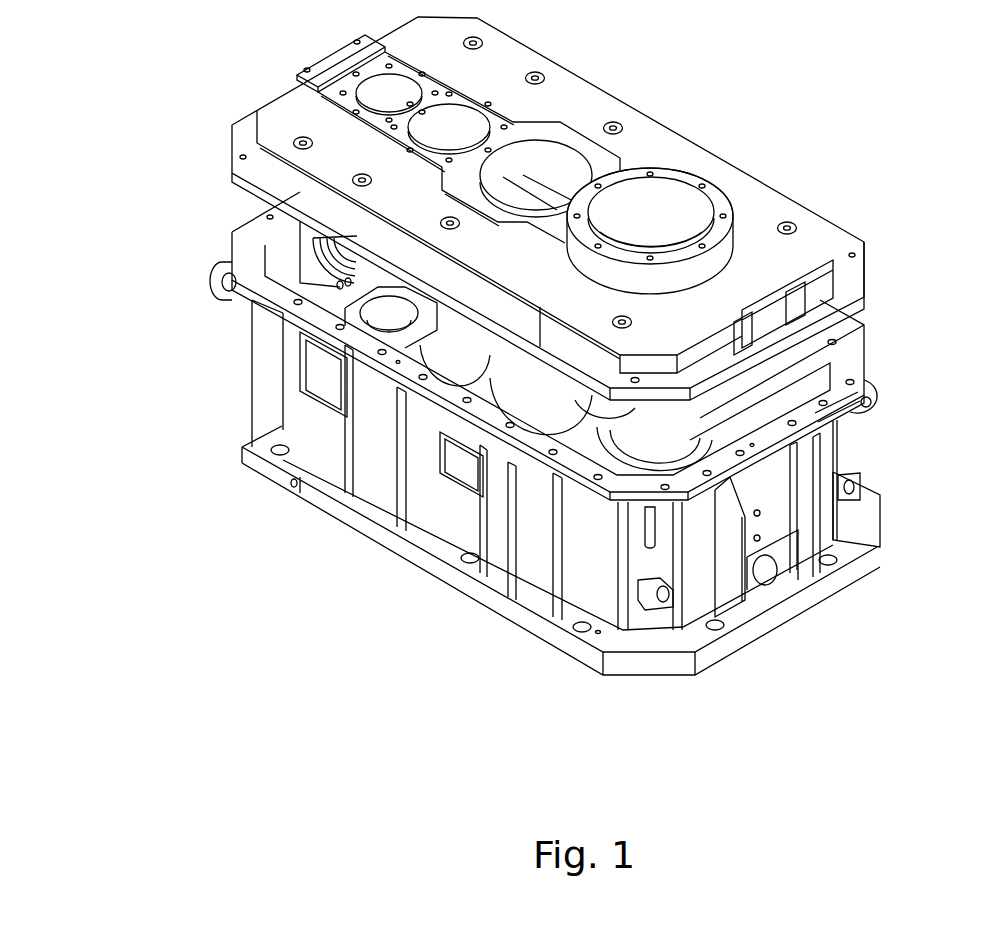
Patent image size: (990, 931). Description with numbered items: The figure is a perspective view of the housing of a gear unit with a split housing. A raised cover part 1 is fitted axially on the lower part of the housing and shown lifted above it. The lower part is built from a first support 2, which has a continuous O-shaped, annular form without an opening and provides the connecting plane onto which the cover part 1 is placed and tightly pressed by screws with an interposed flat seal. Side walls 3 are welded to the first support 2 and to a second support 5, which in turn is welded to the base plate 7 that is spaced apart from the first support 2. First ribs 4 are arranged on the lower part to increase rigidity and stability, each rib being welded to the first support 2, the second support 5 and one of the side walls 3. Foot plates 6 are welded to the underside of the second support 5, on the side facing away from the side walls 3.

The cover part 1 is at (812, 244).
The first support 2 is at (852, 357).
The side walls 3 is at (382, 465).
The first ribs 4 is at (410, 492).
The second support 5 is at (412, 563).
The foot plates 6 is at (537, 650).
The base plate 7 is at (607, 415).